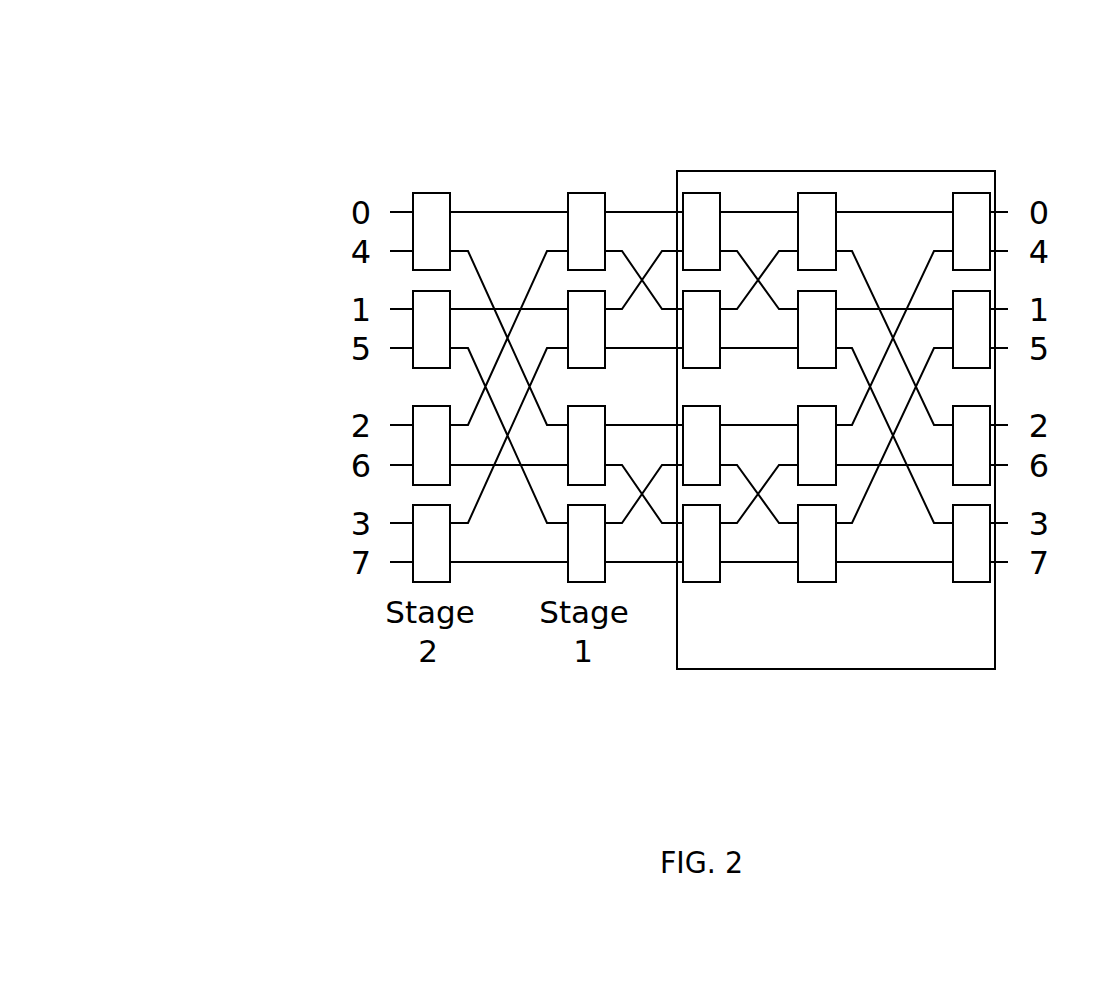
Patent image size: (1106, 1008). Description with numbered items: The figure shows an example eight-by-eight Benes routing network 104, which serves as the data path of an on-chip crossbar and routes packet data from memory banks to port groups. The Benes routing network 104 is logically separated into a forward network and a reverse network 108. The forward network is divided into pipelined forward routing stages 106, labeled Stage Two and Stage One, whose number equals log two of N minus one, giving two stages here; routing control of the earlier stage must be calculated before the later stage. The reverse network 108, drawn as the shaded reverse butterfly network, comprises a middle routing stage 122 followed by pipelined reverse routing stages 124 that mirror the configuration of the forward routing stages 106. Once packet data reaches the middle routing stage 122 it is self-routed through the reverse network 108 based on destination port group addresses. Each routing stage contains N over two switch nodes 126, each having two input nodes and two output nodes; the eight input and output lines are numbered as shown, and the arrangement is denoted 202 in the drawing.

The Benes routing network 104 is at (203, 118).
The forward routing stages 106 is at (590, 170).
The reverse network 108 is at (1002, 170).
The middle routing stage 122 is at (702, 192).
The reverse routing stages 124 is at (967, 192).
The switch node 126 is at (413, 405).
The example permutation configuration 202 is at (250, 731).